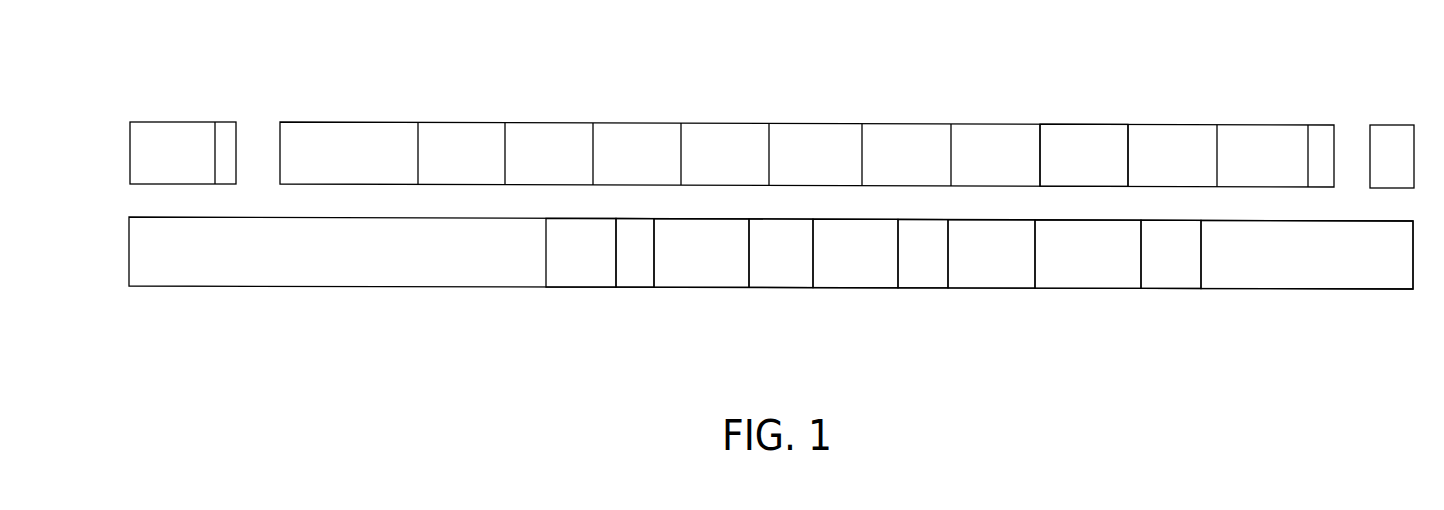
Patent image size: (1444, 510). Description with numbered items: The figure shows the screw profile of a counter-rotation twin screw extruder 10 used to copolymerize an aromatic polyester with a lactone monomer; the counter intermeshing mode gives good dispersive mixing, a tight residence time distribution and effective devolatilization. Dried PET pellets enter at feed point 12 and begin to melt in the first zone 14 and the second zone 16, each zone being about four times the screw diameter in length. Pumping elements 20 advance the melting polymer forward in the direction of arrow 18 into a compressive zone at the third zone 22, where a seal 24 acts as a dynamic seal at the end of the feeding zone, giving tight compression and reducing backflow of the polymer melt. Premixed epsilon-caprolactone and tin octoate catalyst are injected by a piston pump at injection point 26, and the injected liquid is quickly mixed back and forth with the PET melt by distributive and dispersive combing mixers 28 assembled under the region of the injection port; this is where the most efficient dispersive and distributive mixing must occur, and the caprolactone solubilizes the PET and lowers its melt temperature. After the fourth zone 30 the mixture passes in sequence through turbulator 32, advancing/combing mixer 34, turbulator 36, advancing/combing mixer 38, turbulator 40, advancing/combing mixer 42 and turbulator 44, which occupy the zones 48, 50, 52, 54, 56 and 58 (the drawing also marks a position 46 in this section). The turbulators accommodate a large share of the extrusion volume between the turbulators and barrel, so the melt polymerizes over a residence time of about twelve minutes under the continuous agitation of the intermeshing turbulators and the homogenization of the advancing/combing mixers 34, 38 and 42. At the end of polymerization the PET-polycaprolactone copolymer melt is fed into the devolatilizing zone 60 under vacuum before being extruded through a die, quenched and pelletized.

The counter-rotation twin screw extruder 10 is at (1415, 298).
The feed point 12 is at (1352, 125).
The first zone 14 is at (1308, 125).
The second zone 16 is at (1217, 125).
The arrow 18 is at (1305, 203).
The pumping elements 20 is at (1296, 266).
The third zone 22 is at (1128, 124).
The seal 24 is at (1158, 266).
The injection point 26 is at (1080, 143).
The distributive and dispersive combing mixers 28 is at (1072, 266).
The fourth zone 30 is at (1040, 124).
The turbulator 32 is at (977, 266).
The advancing/combing mixer 34 is at (909, 266).
The turbulator 36 is at (843, 266).
The advancing/combing mixer 38 is at (767, 266).
The turbulator 40 is at (690, 266).
The advancing/combing mixer 42 is at (622, 266).
The turbulator 44 is at (567, 266).
The first slot 46 is at (951, 124).
The zone 48 is at (862, 124).
The zone 50 is at (769, 123).
The zone 52 is at (681, 123).
The zone 54 is at (593, 123).
The zone 56 is at (505, 123).
The zone 58 is at (418, 122).
The devolatilizing zone 60 is at (259, 133).